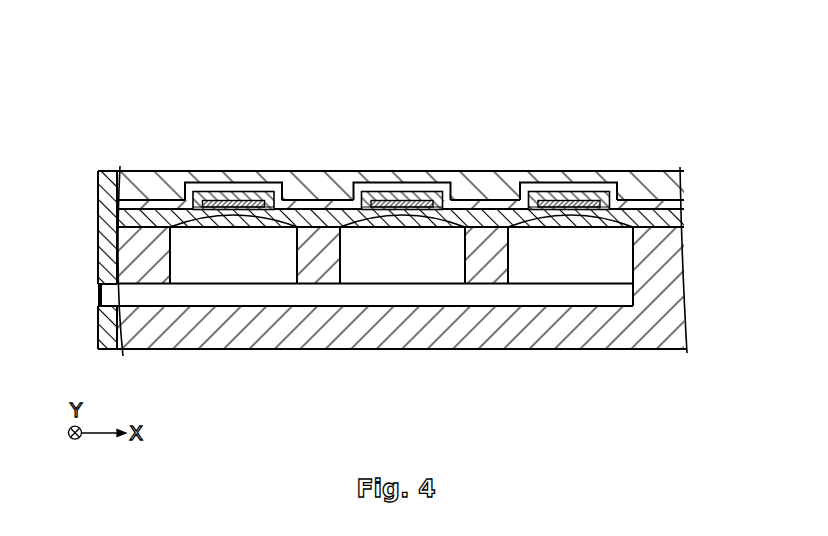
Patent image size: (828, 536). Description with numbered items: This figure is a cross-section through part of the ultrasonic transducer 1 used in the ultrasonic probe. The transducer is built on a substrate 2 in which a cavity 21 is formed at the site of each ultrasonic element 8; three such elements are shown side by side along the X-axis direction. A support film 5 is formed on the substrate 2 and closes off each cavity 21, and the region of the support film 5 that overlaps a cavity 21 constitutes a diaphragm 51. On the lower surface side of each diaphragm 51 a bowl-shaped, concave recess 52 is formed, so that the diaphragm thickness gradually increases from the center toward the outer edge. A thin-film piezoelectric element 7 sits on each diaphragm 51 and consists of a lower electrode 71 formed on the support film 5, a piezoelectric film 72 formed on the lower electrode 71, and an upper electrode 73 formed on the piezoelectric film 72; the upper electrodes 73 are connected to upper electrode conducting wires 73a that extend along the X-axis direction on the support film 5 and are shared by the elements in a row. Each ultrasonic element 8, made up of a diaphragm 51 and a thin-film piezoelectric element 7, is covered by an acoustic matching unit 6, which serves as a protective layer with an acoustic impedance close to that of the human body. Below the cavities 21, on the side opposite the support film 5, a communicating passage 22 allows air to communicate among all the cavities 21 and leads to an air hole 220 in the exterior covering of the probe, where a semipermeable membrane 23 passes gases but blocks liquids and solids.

The ultrasonic transducer 1 is at (647, 83).
The substrate 2 is at (677, 263).
The support film 5 is at (672, 220).
The acoustic matching unit 6 is at (672, 185).
The thin-film piezoelectric element 7 is at (181, 113).
The ultrasonic element 8 is at (187, 168).
The cavity 21 is at (269, 272).
The communicating passage 22 is at (143, 297).
The semipermeable membrane 23 is at (100, 298).
The diaphragm 51 is at (198, 219).
The recess 52 is at (233, 217).
The lower electrode 71 is at (206, 206).
The piezoelectric film 72 is at (240, 203).
The upper electrode 73 is at (267, 190).
The upper electrode conducting wire 73a is at (143, 199).
The air hole 220 is at (92, 285).